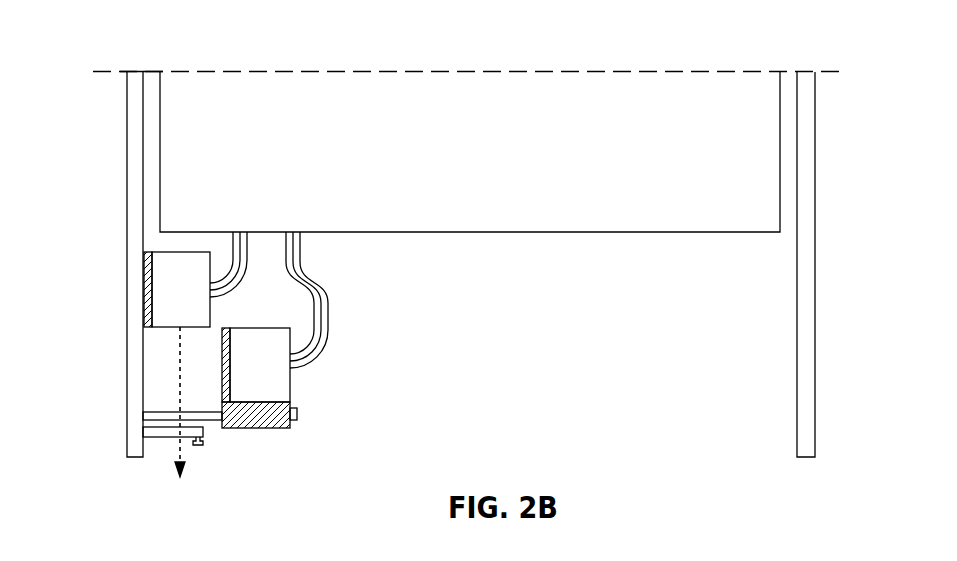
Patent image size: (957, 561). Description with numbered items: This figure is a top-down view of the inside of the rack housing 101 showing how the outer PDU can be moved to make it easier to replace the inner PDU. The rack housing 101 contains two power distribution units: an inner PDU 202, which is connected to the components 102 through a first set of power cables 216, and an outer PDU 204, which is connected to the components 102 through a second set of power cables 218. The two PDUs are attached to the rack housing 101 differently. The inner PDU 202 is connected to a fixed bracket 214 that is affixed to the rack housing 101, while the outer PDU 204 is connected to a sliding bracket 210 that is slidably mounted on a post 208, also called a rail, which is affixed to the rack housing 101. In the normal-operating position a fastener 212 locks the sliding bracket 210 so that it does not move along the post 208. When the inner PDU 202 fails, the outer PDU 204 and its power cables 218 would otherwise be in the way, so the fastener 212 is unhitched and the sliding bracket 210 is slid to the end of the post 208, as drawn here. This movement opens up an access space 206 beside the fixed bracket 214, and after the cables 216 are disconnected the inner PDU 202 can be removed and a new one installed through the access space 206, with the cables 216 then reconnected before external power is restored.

The rack housing 101 is at (125, 152).
The components 102 is at (470, 152).
The inner PDU 202 is at (181, 289).
The outer PDU 204 is at (256, 365).
The access space 206 is at (158, 378).
The post 208 is at (298, 411).
The sliding bracket 210 is at (253, 428).
The fastener 212 is at (198, 446).
The fixed bracket 214 is at (143, 290).
The first set of power cables 216 is at (250, 245).
The second set of power cables 218 is at (335, 327).